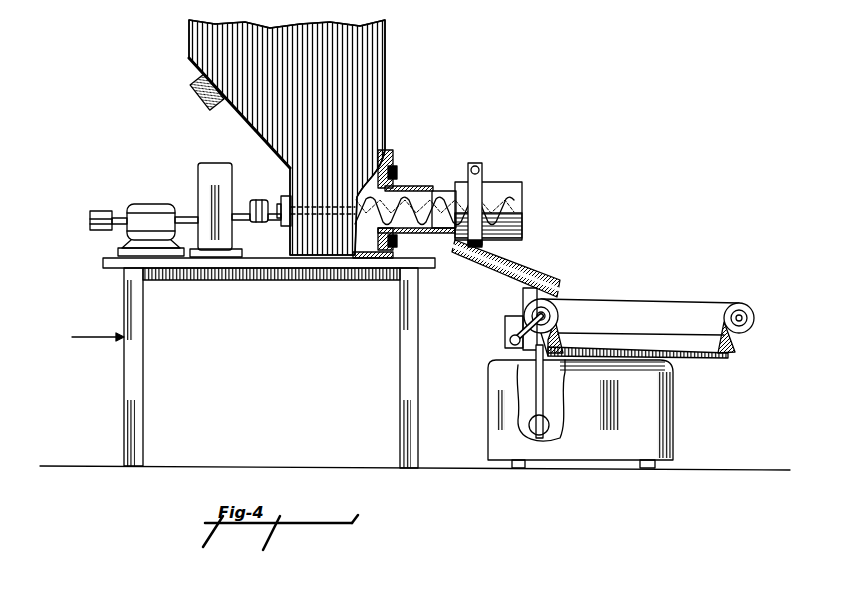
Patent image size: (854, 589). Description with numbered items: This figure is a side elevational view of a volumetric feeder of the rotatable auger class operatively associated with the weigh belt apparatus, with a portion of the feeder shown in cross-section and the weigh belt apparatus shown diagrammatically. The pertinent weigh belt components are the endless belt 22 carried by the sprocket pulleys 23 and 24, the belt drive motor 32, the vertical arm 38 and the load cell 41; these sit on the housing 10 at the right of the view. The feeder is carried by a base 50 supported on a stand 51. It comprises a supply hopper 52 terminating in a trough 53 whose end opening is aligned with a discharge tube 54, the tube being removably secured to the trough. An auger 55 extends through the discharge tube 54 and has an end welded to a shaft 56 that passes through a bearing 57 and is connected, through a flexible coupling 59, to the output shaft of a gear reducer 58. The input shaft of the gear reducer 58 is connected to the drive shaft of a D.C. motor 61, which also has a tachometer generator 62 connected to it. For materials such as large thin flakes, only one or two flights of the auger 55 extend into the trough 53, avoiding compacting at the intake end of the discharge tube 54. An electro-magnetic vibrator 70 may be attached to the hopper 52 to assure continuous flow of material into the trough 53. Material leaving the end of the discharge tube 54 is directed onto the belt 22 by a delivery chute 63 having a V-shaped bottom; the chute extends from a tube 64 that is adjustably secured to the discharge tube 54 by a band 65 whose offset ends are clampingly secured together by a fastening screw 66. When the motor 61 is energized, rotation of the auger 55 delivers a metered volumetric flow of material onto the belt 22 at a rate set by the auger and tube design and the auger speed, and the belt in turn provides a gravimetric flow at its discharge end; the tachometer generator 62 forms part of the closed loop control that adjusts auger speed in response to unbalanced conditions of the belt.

The housing 10 is at (675, 430).
The endless belt 22 is at (600, 300).
The sprocket pulley 23 is at (749, 314).
The sprocket pulley 24 is at (559, 318).
The belt drive motor 32 is at (523, 292).
The vertical arm 38 is at (545, 385).
The load cell 41 is at (550, 428).
The base 50 is at (108, 264).
The stand 51 is at (98, 329).
The supply hopper 52 is at (384, 52).
The trough 53 is at (291, 190).
The discharge tube 54 is at (412, 186).
The auger 55 is at (431, 193).
The shaft 56 is at (358, 200).
The bearing 57 is at (283, 222).
The gear reducer 58 is at (212, 193).
The flexible coupling 59 is at (258, 198).
The D.C. motor 61 is at (150, 205).
The tachometer generator 62 is at (100, 211).
The delivery chute 63 is at (550, 270).
The tube 64 is at (512, 183).
The band 65 is at (471, 248).
The fastening screw 66 is at (477, 165).
The electro-magnetic vibrator 70 is at (195, 86).